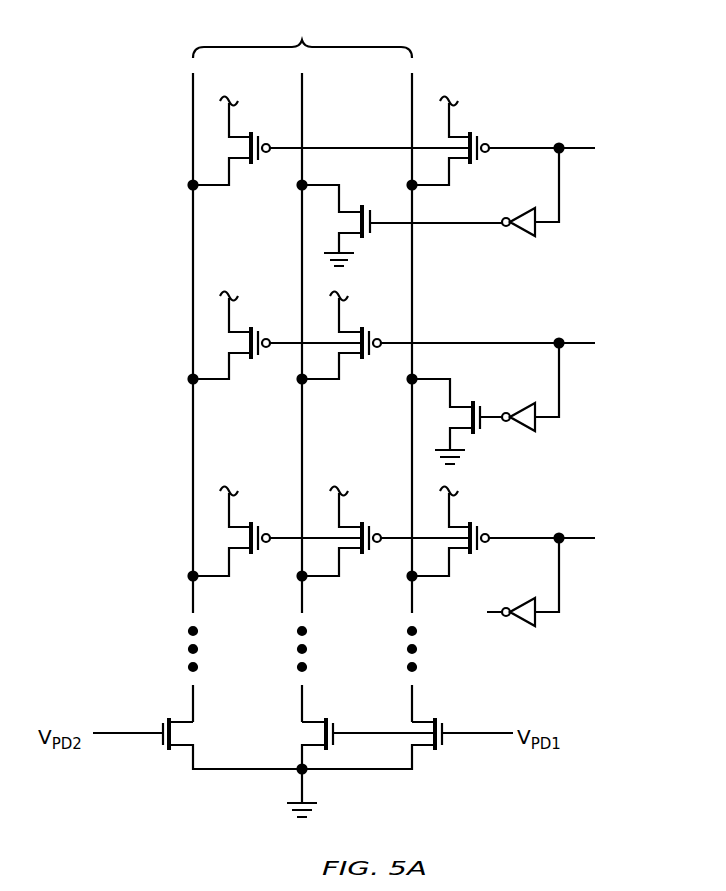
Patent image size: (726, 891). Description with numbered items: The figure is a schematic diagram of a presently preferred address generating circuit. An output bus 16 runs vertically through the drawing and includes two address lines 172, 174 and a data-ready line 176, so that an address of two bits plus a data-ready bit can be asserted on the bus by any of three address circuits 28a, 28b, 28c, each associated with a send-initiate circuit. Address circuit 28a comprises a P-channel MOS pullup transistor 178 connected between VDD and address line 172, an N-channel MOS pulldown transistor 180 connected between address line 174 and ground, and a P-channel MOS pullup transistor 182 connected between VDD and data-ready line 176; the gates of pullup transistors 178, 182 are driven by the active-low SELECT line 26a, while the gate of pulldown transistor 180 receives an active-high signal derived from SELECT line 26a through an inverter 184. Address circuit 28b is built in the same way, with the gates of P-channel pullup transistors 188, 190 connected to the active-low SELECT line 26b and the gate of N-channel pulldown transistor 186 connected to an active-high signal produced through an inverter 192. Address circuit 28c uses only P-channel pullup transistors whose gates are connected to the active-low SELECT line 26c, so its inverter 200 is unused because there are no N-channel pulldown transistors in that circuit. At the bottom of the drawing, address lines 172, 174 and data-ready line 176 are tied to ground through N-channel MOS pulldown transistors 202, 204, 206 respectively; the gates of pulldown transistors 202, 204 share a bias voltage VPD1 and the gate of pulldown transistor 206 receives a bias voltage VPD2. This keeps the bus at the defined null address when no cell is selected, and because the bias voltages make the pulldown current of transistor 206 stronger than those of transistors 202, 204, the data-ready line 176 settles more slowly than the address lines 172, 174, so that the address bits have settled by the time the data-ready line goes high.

The output bus 16 is at (302, 38).
The data-ready line 176 is at (193, 93).
The address line 174 is at (302, 93).
The address line 172 is at (412, 93).
The P-channel MOS pullup transistor 182 is at (236, 137).
The P-channel MOS pullup transistor 178 is at (456, 137).
The N-channel MOS pulldown transistor 180 is at (345, 212).
The inverter 184 is at (535, 232).
The SELECT line 26a is at (595, 148).
The address circuit 28a is at (541, 187).
The P-channel MOS pullup transistor 190 is at (236, 332).
The P-channel MOS pullup transistor 188 is at (346, 332).
The N-channel MOS pulldown transistor 186 is at (457, 402).
The inverter 192 is at (535, 427).
The SELECT line 26b is at (595, 343).
The address circuit 28b is at (541, 371).
The inverter 200 is at (535, 622).
The SELECT line 26c is at (595, 538).
The address circuit 28c is at (541, 575).
The N-channel MOS pulldown transistor 206 is at (184, 720).
The N-channel MOS pulldown transistor 204 is at (312, 722).
The N-channel MOS pulldown transistor 202 is at (422, 722).